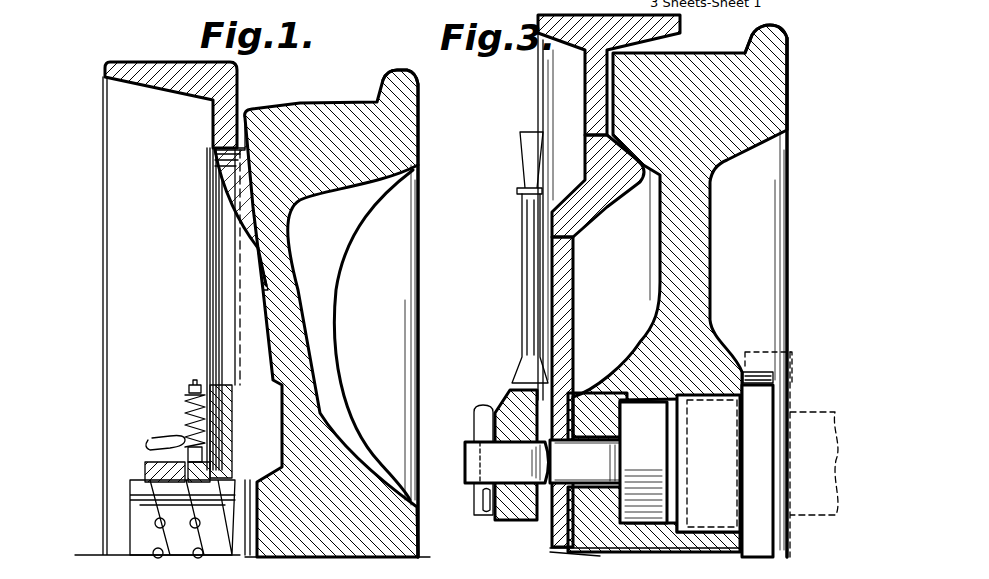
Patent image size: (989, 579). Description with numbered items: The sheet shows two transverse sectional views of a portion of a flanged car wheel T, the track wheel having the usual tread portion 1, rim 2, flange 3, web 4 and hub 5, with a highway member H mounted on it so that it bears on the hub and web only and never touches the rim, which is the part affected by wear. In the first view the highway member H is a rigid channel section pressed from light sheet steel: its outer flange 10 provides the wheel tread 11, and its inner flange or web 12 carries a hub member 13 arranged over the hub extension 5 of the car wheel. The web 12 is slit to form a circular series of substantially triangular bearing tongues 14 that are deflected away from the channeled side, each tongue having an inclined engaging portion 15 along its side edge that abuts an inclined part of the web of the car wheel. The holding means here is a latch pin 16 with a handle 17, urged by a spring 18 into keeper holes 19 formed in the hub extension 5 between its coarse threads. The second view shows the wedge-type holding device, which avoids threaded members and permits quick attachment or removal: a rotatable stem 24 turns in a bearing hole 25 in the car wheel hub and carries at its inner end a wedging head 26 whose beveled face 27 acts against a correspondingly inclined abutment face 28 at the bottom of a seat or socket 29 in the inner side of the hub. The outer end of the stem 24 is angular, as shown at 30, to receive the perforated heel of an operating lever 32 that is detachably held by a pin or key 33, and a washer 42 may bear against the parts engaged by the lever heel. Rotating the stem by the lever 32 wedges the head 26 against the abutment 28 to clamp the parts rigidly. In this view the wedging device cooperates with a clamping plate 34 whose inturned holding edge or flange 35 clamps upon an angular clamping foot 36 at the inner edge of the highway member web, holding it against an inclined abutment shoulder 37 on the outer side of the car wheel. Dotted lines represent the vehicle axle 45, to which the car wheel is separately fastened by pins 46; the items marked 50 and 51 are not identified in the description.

In FIG. 1, the tread portion 1 is at (324, 102).
In FIG. 3, the tread portion 1 is at (685, 56).
In FIG. 1, the rim 2 is at (265, 147).
In FIG. 3, the rim 2 is at (640, 92).
In FIG. 1, the flange 3 is at (418, 84).
In FIG. 3, the flange 3 is at (764, 34).
In FIG. 1, the web 4 is at (293, 333).
In FIG. 3, the web 4 is at (692, 263).
In FIG. 1, the hub 5 is at (130, 527).
In FIG. 3, the hub 5 is at (712, 320).
In FIG. 1, the outer flange 10 is at (176, 62).
In FIG. 3, the outer flange 10 is at (680, 15).
In FIG. 1, the wheel tread 11 is at (140, 80).
In FIG. 3, the wheel tread 11 is at (560, 30).
In FIG. 1, the inner flange or web 12 is at (224, 128).
In FIG. 1, the hub member 13 is at (160, 470).
In FIG. 1, the bearing tongues 14 is at (248, 270).
In FIG. 1, the inclined engaging portion 15 is at (253, 345).
In FIG. 1, the latch pin 16 is at (193, 382).
In FIG. 1, the handle 17 is at (160, 440).
In FIG. 1, the spring 18 is at (183, 408).
In FIG. 1, the keeper holes 19 is at (195, 530).
In FIG. 3, the rotatable stem 24 is at (610, 562).
In FIG. 3, the bearing hole 25 is at (587, 430).
In FIG. 3, the wedging head 26 is at (704, 570).
In FIG. 3, the beveled or inclined face 27 is at (630, 463).
In FIG. 3, the abutment face 28 is at (607, 390).
In FIG. 3, the seat or socket 29 is at (662, 396).
In FIG. 3, the angular outer end 30 is at (472, 458).
In FIG. 3, the operating lever 32 is at (530, 292).
In FIG. 3, the pin or key 33 is at (478, 412).
In FIG. 3, the clamping plate 34 is at (556, 257).
In FIG. 3, the inturned holding edge or flange 35 is at (528, 178).
In FIG. 3, the angular clamping foot 36 is at (607, 213).
In FIG. 3, the abutment shoulder 37 is at (645, 196).
In FIG. 3, the washer 42 is at (562, 550).
In FIG. 3, the axle 45 is at (810, 428).
In FIG. 3, the pins 46 is at (760, 375).
In FIG. 3, the pin end 50 is at (488, 574).
In FIG. 3, the slot 51 is at (486, 516).
In FIG. 1, the highway member H is at (121, 60).
In FIG. 3, the highway member H is at (536, 105).
In FIG. 1, the flanged car wheel T is at (421, 273).
In FIG. 3, the flanged car wheel T is at (790, 225).